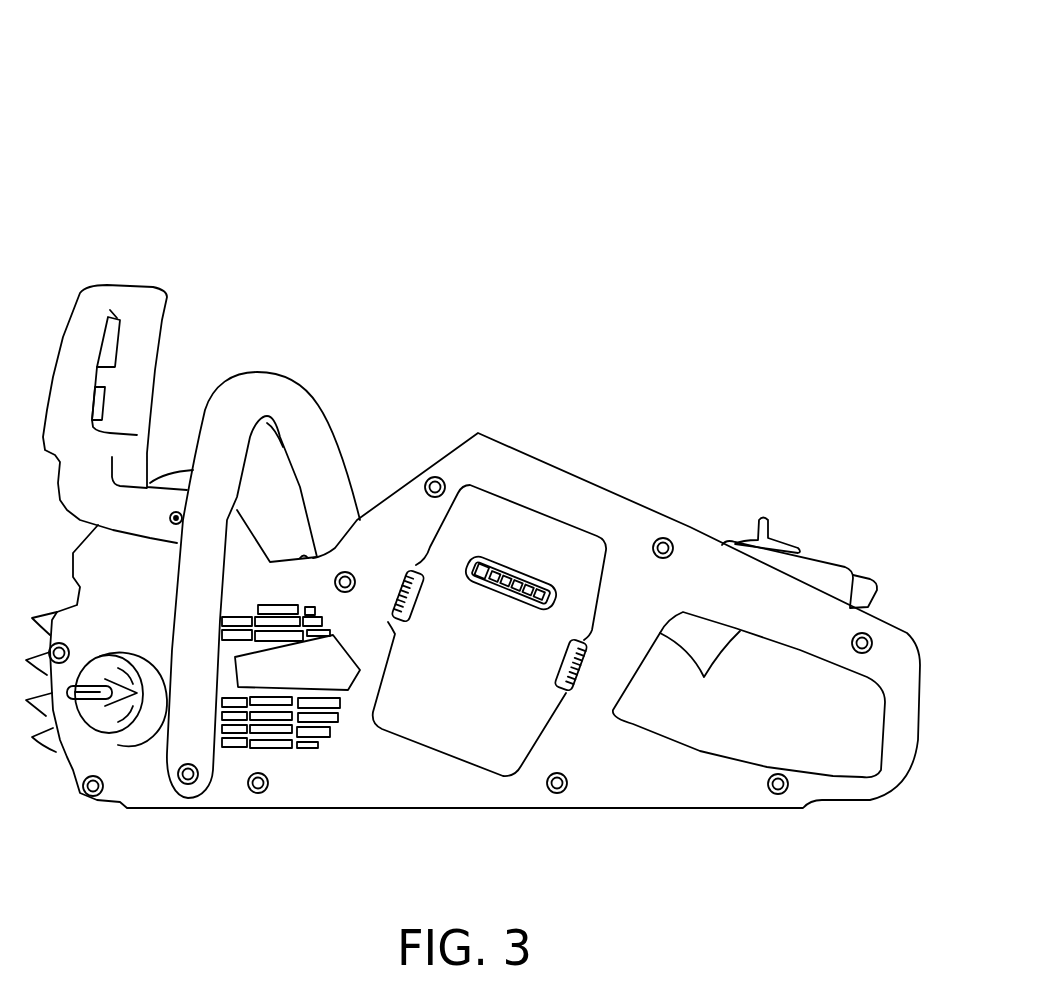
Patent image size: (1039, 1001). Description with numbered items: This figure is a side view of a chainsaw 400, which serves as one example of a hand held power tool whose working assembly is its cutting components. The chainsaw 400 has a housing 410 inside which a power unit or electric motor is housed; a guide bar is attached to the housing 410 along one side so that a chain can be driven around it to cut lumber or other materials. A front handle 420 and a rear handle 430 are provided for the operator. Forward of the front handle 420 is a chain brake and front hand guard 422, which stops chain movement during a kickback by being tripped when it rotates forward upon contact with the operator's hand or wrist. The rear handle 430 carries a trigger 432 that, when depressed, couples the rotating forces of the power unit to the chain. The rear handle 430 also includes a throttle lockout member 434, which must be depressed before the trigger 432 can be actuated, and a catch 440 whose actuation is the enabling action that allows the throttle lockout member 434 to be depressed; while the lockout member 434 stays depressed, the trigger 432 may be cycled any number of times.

The chainsaw 400 is at (128, 138).
The housing 410 is at (498, 460).
The front handle 420 is at (265, 383).
The chain brake and front hand guard 422 is at (150, 318).
The rear handle 430 is at (805, 618).
The trigger 432 is at (693, 642).
The throttle lockout member 434 is at (807, 570).
The catch 440 is at (769, 536).